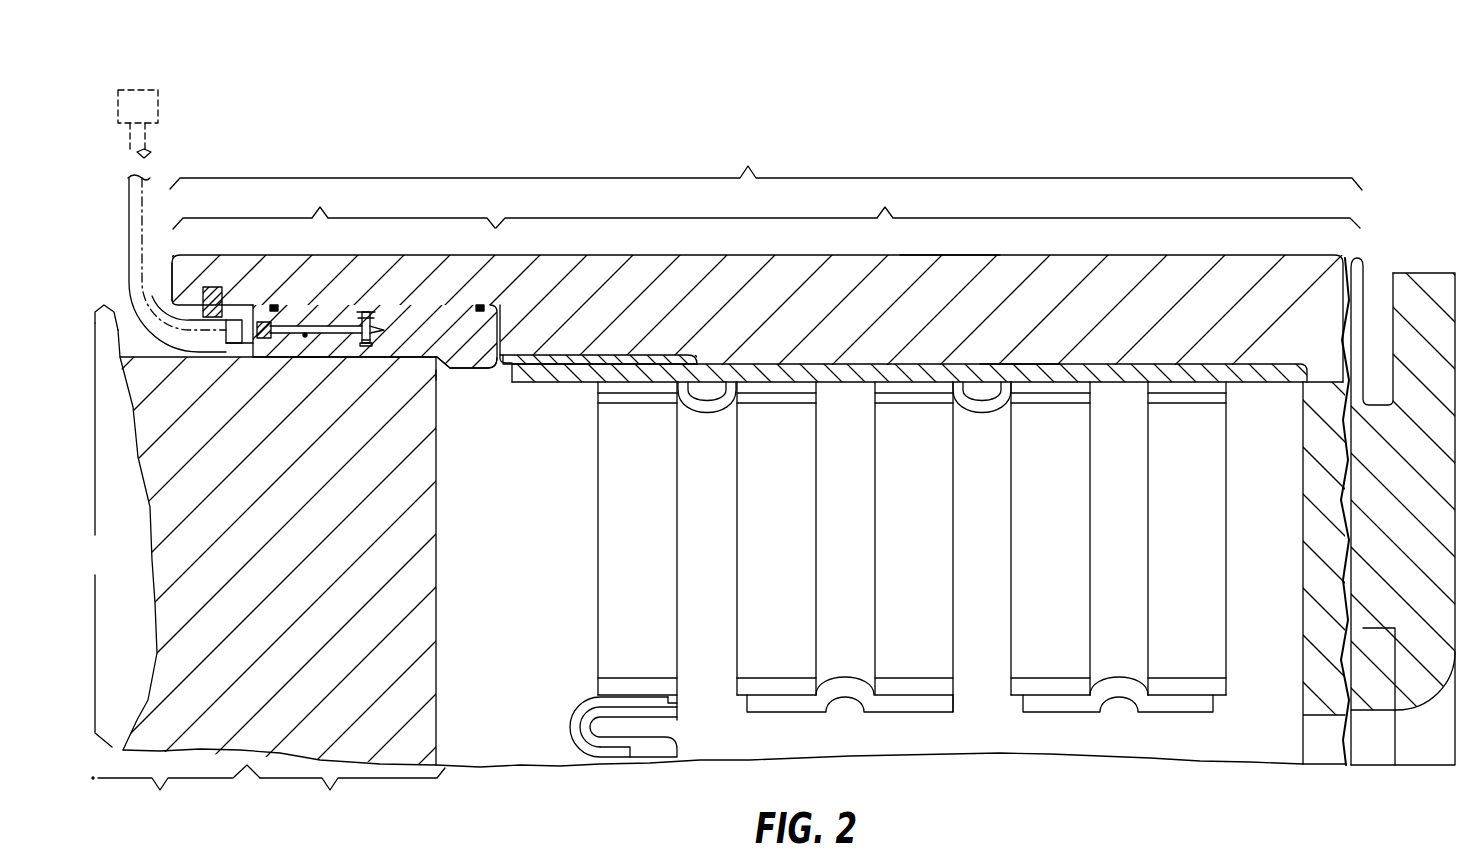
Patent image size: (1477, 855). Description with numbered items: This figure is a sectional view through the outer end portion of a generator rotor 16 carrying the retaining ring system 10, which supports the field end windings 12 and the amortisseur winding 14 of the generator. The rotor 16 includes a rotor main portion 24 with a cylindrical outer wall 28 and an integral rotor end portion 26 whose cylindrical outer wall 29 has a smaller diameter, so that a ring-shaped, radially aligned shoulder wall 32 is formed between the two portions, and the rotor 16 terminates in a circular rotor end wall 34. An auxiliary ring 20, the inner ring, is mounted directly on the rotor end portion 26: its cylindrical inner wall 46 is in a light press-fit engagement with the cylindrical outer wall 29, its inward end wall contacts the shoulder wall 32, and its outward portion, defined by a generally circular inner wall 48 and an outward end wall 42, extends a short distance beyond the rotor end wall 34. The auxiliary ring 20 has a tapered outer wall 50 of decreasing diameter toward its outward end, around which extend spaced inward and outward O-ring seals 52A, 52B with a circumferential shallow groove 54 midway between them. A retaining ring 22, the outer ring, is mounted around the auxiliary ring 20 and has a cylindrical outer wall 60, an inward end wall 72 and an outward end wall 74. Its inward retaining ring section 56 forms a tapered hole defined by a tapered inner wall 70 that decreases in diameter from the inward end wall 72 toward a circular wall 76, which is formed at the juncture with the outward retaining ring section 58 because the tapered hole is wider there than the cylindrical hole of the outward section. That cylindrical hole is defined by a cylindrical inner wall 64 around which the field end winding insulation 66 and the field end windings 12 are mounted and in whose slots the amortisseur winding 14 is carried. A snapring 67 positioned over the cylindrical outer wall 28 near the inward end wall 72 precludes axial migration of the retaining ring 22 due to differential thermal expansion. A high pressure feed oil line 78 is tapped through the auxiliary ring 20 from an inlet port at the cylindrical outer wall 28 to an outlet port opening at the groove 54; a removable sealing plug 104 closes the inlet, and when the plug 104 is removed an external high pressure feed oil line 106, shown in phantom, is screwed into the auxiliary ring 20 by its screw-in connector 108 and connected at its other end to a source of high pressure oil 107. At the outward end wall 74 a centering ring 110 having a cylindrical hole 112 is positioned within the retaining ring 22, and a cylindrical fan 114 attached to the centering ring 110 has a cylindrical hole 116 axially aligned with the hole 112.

The retaining ring system 10 is at (119, 192).
The field end windings 12 is at (1226, 523).
The amortisseur winding 14 is at (634, 357).
The rotor 16 is at (126, 536).
The auxiliary ring 20 is at (347, 348).
The retaining ring 22 is at (766, 163).
The rotor main portion 24 is at (176, 793).
The rotor end portion 26 is at (352, 794).
The cylindrical outer wall 28 is at (102, 307).
The cylindrical outer wall 29 is at (303, 358).
The shoulder wall 32 is at (237, 363).
The rotor end wall 34 is at (438, 510).
The outward end wall 42 is at (490, 342).
The cylindrical inner wall 46 is at (392, 329).
The circular inner wall 48 is at (468, 369).
The tapered outer wall 50 is at (457, 340).
The inward O-ring seal 52A is at (274, 306).
The outward O-ring seal 52B is at (480, 306).
The circumferential shallow groove 54 is at (703, 306).
The inward retaining ring section 56 is at (334, 205).
The outward retaining ring section 58 is at (928, 204).
The cylindrical outer wall 60 is at (955, 255).
The cylindrical inner wall 64 is at (1018, 363).
The field end winding insulation 66 is at (792, 370).
The snapring 67 is at (221, 282).
The tapered inner wall 70 is at (418, 305).
The inward end wall 72 is at (178, 275).
The outward end wall 74 is at (1346, 300).
The circular wall 76 is at (506, 332).
The high pressure feed oil line 78 is at (305, 333).
The removable sealing plug 104 is at (127, 293).
The external high pressure feed oil line 106 is at (141, 203).
The source of high pressure oil 107 is at (160, 106).
The screw-in connector 108 is at (227, 348).
The centering ring 110 is at (1310, 586).
The cylindrical hole 112 is at (1325, 745).
The cylindrical fan 114 is at (1430, 665).
The cylindrical hole 116 is at (1428, 745).